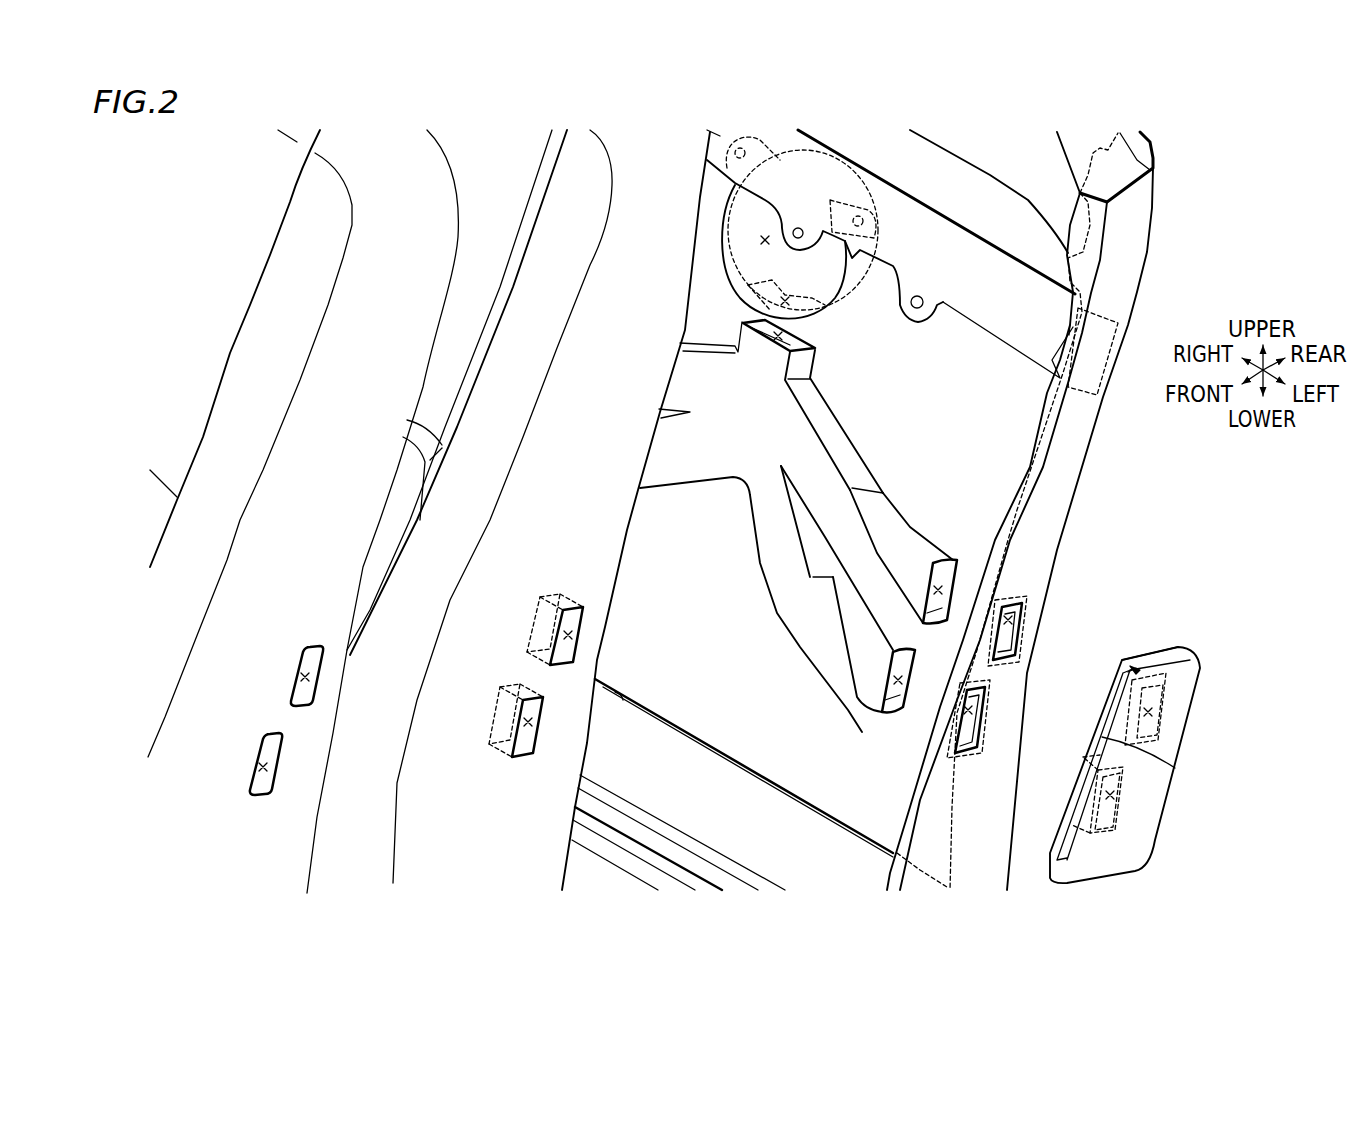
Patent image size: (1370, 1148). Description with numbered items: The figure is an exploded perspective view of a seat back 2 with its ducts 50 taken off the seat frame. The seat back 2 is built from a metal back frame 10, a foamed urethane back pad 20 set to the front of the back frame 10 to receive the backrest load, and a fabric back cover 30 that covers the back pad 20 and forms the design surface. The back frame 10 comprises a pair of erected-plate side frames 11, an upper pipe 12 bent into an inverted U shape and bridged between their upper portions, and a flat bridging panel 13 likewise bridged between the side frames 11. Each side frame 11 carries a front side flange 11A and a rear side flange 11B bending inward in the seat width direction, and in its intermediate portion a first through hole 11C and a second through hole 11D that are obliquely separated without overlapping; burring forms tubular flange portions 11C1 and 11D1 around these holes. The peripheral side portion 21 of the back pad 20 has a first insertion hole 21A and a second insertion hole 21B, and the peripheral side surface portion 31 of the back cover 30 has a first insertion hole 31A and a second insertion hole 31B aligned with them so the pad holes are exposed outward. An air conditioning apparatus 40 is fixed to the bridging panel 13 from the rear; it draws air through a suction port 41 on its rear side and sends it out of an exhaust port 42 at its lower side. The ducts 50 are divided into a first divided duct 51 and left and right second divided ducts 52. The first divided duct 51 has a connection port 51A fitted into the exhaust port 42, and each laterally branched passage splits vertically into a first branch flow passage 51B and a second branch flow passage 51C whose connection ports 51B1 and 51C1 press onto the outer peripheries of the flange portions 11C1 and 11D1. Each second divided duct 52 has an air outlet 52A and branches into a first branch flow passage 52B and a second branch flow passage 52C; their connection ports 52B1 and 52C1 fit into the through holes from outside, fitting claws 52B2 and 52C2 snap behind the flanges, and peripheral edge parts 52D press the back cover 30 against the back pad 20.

The seat back 2 is at (1061, 511).
The back frame 10 is at (1057, 511).
The side frame 11 is at (1047, 511).
The front side flange 11A is at (1033, 458).
The rear side flange 11B is at (1067, 423).
The first through hole 11C is at (1045, 631).
The flange portion 11C1 is at (1019, 638).
The second through hole 11D is at (1012, 719).
The flange portion 11D1 is at (979, 727).
The upper pipe 12 is at (1112, 166).
The bridging panel 13 is at (993, 290).
The back pad 20 is at (581, 563).
The peripheral side portion 21 is at (593, 525).
The first insertion hole 21A is at (571, 636).
The second insertion hole 21B is at (531, 723).
The back cover 30 is at (418, 207).
The peripheral side surface portion 31 is at (407, 267).
The first insertion hole 31A is at (303, 677).
The second insertion hole 31B is at (261, 767).
The air conditioning apparatus 40 is at (872, 196).
The suction port 41 is at (762, 243).
The exhaust port 42 is at (825, 305).
The duct 50 is at (994, 601).
The first divided duct 51 is at (868, 547).
The connection port 51A is at (781, 334).
The first branch flow passage 51B is at (922, 541).
The connection port 51B1 is at (944, 592).
The second branch flow passage 51C is at (848, 620).
The connection port 51C1 is at (900, 690).
The second divided duct 52 is at (1141, 735).
The air outlet 52A is at (1175, 768).
The first branch flow passage 52B is at (1141, 699).
The connection port 52B1 is at (1153, 712).
The fitting claw 52B2 is at (1130, 668).
The second branch flow passage 52C is at (1153, 802).
The connection port 52C1 is at (1117, 797).
The fitting claw 52C2 is at (1100, 755).
The peripheral edge part 52D is at (1146, 652).